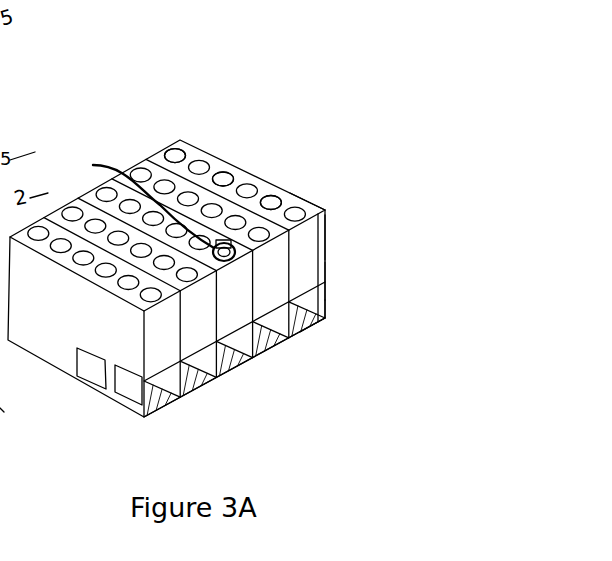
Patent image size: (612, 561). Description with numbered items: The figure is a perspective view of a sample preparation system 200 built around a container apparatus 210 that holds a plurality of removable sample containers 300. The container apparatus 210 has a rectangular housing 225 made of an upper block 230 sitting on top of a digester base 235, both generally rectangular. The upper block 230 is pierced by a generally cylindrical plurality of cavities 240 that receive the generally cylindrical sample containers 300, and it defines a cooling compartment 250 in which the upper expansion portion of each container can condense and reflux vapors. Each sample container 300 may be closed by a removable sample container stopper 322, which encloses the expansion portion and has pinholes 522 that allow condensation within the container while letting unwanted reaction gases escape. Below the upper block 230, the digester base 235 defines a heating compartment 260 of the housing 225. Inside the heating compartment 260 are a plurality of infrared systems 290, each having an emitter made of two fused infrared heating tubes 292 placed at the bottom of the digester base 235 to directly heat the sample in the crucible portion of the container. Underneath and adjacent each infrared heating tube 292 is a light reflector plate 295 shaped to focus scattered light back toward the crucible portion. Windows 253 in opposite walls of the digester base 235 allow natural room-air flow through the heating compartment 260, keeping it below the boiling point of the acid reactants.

The sample preparation system 200 is at (97, 102).
The container apparatus 210 is at (190, 137).
The housing 225 is at (220, 153).
The upper block 230 is at (328, 212).
The digester base 235 is at (327, 300).
The cavities 240 is at (140, 162).
The cooling compartment 250 is at (328, 240).
The windows 253 is at (100, 386).
The heating compartment 260 is at (328, 277).
The infrared system 290 is at (205, 387).
The infrared heating tube 292 is at (240, 366).
The light reflector plate 295 is at (300, 335).
The sample container 300 is at (284, 198).
The sample container stopper 322 is at (135, 200).
The pinholes 522 is at (229, 244).